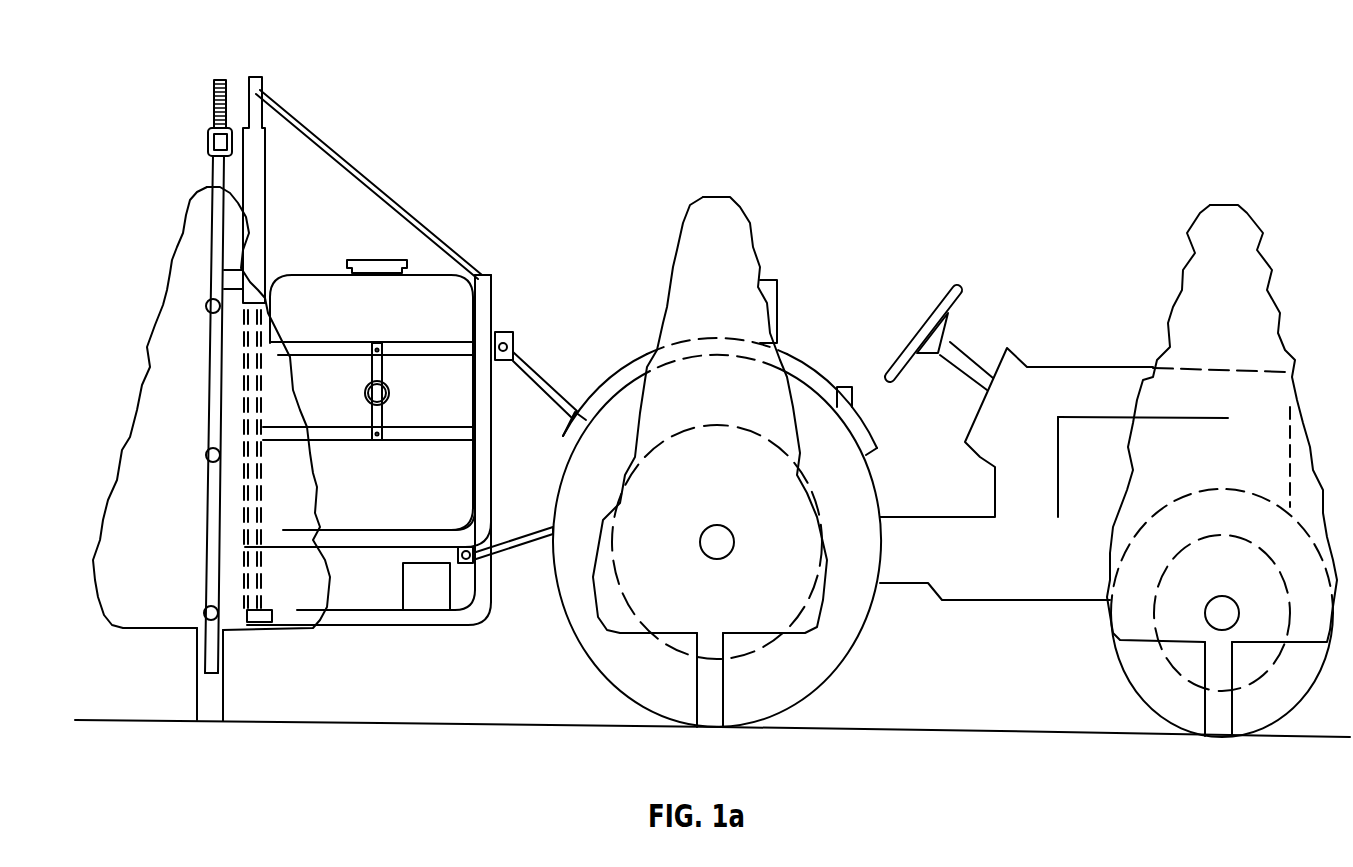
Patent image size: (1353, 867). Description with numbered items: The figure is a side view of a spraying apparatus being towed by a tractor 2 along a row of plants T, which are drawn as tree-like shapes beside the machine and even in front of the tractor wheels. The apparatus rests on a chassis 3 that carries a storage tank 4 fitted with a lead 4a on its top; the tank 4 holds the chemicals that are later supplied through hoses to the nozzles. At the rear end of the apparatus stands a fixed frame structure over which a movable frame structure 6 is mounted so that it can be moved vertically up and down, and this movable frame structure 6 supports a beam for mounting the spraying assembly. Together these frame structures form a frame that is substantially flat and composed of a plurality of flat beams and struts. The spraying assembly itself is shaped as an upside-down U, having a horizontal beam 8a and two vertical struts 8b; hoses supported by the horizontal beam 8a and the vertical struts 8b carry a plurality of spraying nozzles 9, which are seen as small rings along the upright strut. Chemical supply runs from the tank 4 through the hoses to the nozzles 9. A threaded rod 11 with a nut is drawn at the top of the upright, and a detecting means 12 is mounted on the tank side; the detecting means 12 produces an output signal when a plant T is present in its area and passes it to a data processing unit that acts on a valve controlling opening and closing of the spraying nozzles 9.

The tractor 2 is at (1083, 388).
The chassis 3 is at (425, 618).
The storage tank 4 is at (440, 308).
The lead 4a is at (375, 261).
The movable frame structure 6 is at (258, 165).
The horizontal beam 8a is at (208, 140).
The vertical struts 8b is at (217, 270).
The spraying nozzles 9 is at (207, 612).
The threaded rod 11 is at (214, 97).
The detecting means 12 is at (387, 390).
The tree T is at (195, 248).